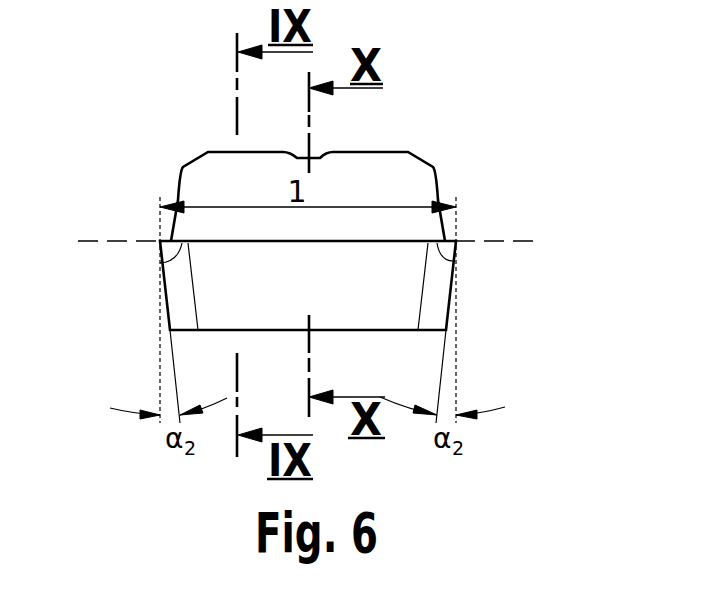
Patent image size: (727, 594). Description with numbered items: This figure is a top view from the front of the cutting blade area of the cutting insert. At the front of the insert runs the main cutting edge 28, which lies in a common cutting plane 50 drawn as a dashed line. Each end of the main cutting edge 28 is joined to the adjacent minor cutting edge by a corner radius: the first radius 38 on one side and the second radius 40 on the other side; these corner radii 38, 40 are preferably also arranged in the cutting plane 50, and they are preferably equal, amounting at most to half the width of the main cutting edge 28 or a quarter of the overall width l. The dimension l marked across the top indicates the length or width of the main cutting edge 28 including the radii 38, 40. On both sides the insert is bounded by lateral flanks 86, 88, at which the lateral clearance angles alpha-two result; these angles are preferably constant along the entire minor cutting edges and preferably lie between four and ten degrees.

The main cutting edge 28 is at (283, 243).
The first radius 38 is at (455, 261).
The second radius 40 is at (160, 263).
The cutting plane 50 is at (522, 240).
The lateral flank 86 is at (452, 313).
The lateral flank 88 is at (167, 313).